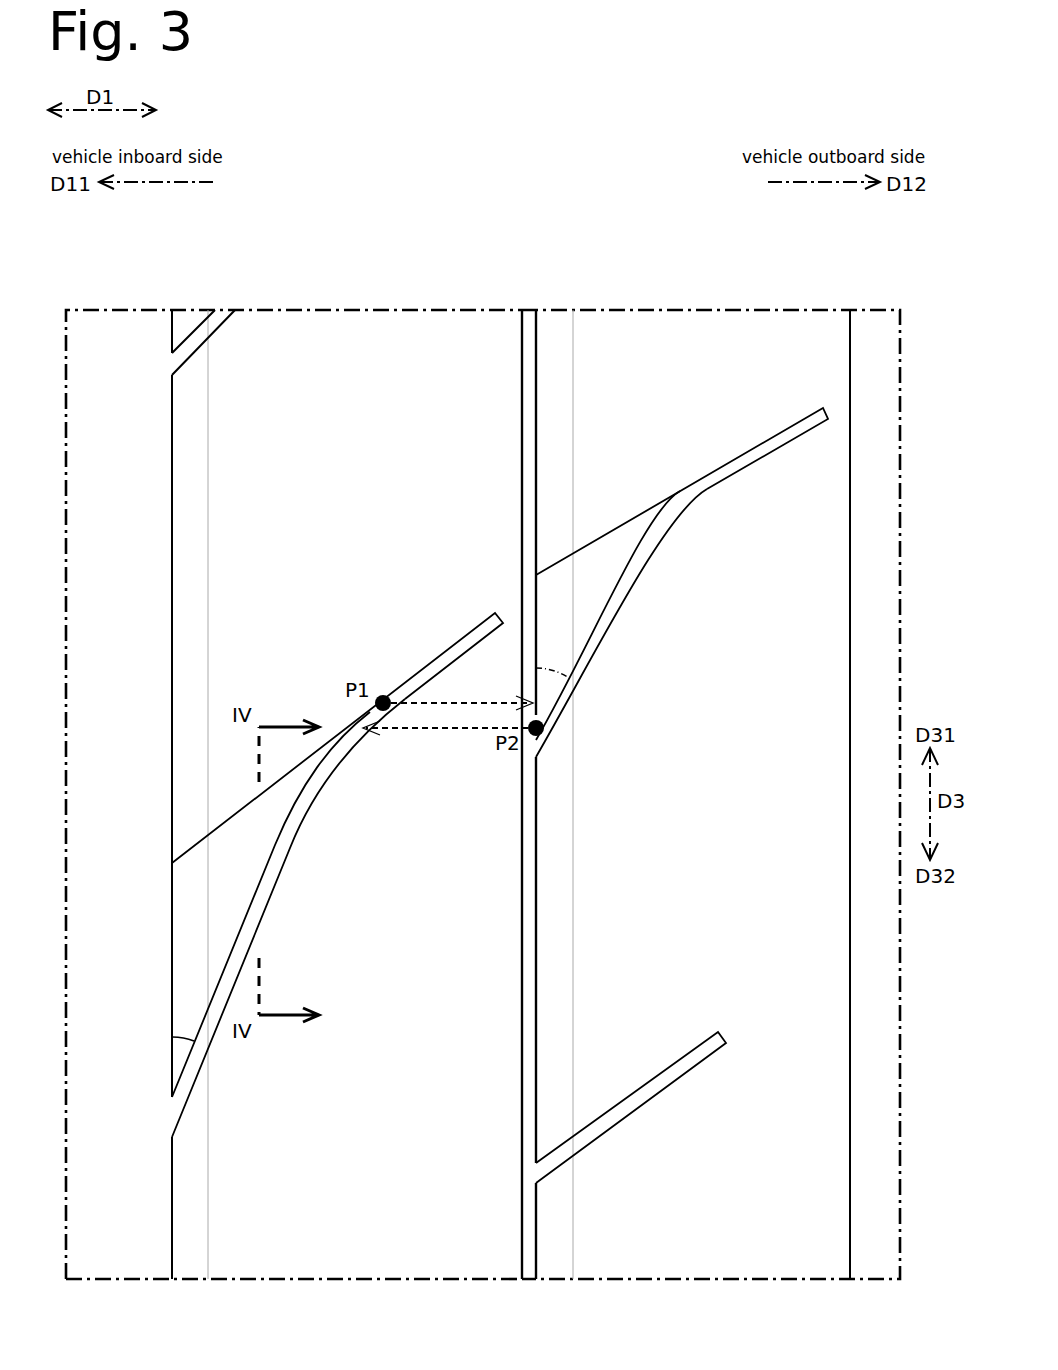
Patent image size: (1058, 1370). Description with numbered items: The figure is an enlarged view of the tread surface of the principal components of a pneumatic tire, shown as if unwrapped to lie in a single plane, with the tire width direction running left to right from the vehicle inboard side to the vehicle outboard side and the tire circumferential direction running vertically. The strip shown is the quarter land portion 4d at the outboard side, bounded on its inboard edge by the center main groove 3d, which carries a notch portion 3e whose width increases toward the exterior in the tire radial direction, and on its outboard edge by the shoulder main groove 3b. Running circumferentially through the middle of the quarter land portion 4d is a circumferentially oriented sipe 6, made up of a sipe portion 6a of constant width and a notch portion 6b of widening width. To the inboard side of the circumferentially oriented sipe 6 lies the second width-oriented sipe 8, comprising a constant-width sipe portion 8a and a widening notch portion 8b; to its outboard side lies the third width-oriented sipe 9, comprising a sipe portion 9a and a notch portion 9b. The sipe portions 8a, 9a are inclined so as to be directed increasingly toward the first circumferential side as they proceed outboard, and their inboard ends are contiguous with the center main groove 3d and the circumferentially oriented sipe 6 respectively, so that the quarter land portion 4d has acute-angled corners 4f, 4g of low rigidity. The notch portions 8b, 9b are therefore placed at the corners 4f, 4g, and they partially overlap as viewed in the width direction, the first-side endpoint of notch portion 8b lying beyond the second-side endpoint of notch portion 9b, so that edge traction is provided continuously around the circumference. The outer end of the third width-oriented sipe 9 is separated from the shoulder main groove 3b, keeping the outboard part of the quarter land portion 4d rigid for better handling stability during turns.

The shoulder main groove 3b is at (878, 340).
The center main groove 3d is at (125, 330).
The notch portion 3e is at (179, 480).
The quarter land portion 4d is at (485, 743).
The corner 4f is at (168, 1057).
The corner 4g is at (533, 684).
The circumferentially oriented sipe 6 is at (562, 1084).
The sipe portion 6a is at (522, 1068).
The notch portion 6b is at (541, 996).
The second width-oriented sipe 8 is at (337, 875).
The sipe portion 8a is at (350, 763).
The notch portion 8b is at (228, 895).
The third width-oriented sipe 9 is at (682, 564).
The sipe portion 9a is at (653, 557).
The notch portion 9b is at (567, 614).